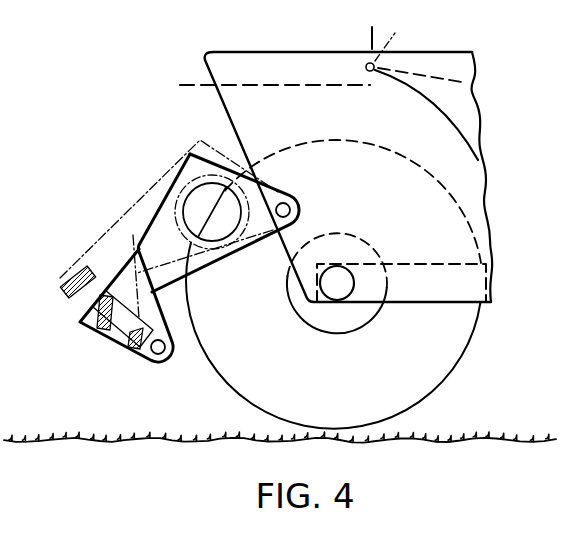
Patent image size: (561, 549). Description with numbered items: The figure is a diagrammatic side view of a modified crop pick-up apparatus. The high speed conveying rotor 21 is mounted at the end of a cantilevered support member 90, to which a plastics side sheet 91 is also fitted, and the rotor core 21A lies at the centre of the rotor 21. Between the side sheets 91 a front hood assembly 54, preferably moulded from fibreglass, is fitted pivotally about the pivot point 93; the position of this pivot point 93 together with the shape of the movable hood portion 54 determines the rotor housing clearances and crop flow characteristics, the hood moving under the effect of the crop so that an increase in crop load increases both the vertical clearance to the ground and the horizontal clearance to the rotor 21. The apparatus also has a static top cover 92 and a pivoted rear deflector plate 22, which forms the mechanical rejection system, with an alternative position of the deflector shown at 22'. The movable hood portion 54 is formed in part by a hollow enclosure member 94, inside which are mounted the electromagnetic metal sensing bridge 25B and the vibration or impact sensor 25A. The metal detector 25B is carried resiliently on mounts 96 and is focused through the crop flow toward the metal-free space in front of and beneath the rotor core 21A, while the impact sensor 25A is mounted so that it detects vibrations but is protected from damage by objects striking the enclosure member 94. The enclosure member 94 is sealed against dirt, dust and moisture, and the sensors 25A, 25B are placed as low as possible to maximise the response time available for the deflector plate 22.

The rotor 21 is at (437, 387).
The rotor core 21A is at (358, 333).
The rear deflector plate 22 is at (453, 109).
The arm alternate position 22' is at (420, 88).
The impact sensor 25A is at (167, 358).
The metal sensing bridge 25B is at (113, 347).
The front hood assembly 54 is at (170, 184).
The cantilevered support member 90 is at (403, 265).
The side sheet 91 is at (224, 108).
The static top cover 92 is at (338, 84).
The pivot point 93 is at (300, 208).
The hollow enclosure member 94 is at (92, 332).
The mounts 96 is at (96, 338).